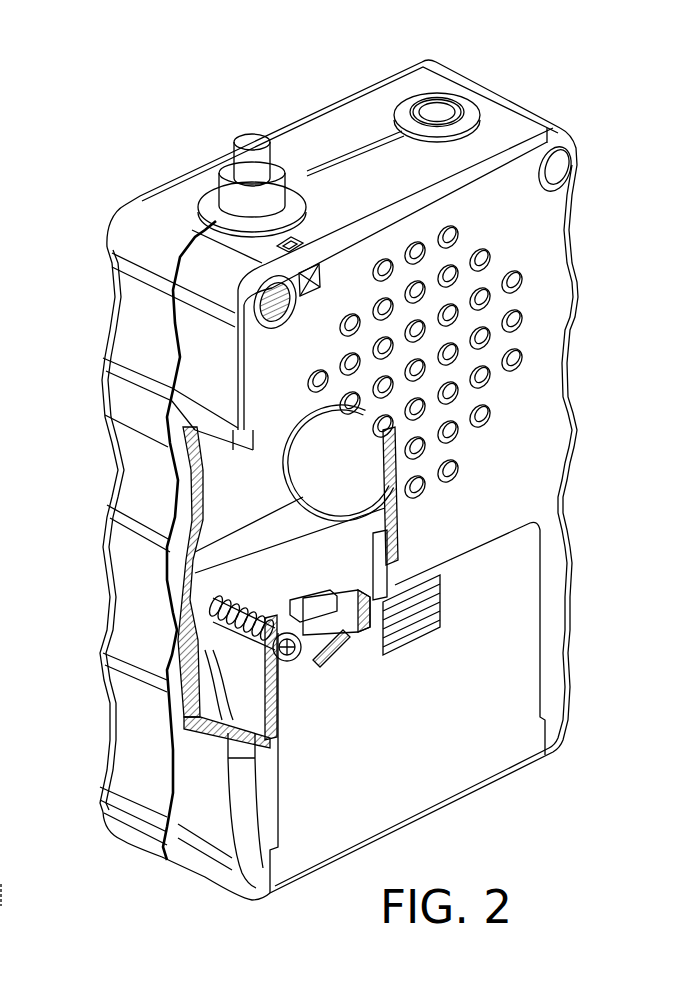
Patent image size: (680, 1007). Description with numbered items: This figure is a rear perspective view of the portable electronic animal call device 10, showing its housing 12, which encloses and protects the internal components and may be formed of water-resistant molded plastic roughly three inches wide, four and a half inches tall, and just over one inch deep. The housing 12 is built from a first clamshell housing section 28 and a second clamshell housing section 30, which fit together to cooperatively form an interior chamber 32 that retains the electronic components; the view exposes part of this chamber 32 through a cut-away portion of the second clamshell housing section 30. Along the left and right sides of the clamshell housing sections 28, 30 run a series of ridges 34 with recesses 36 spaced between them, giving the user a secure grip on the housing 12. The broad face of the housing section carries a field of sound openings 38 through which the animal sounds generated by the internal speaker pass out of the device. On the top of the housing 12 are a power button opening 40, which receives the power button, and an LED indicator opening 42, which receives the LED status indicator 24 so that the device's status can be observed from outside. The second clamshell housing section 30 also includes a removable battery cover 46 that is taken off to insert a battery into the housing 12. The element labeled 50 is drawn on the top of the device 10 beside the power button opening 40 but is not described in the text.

The portable electronic animal call device 10 is at (225, 105).
The housing 12 is at (596, 118).
The status indicator 24 is at (423, 102).
The first clamshell housing section 28 is at (85, 228).
The second clamshell housing section 30 is at (614, 240).
The interior chamber 32 is at (233, 580).
The ridges 34 is at (117, 392).
The recesses 36 is at (128, 467).
The sound openings 38 is at (451, 396).
The power button opening 40 is at (197, 173).
The LED indicator opening 42 is at (463, 92).
The removable battery cover 46 is at (490, 663).
The button 50 is at (211, 143).